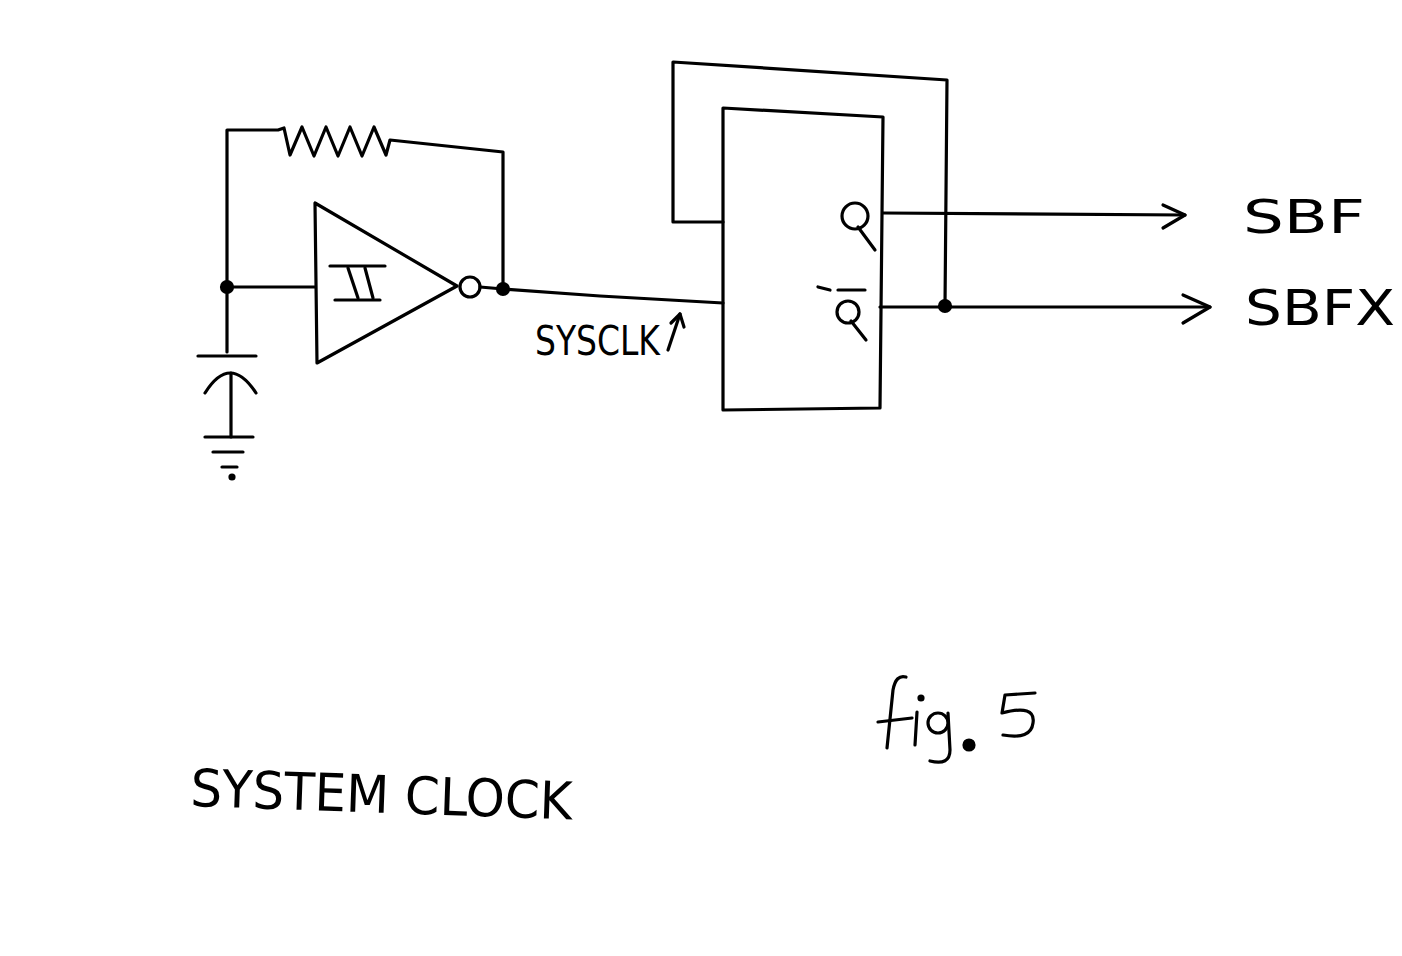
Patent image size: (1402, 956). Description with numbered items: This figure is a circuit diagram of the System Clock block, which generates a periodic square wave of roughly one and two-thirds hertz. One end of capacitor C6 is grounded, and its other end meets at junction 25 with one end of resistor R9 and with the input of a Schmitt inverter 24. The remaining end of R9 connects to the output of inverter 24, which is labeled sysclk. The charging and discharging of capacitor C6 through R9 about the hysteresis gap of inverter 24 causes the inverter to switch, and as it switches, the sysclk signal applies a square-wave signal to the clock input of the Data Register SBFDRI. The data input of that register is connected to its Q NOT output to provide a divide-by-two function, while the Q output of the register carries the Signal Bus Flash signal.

The Schmitt inverter 24 is at (415, 318).
The junction 25 is at (218, 283).
The resistor R9 is at (365, 167).
The capacitor C6 is at (178, 383).
The Data Register SBFDRI is at (777, 418).